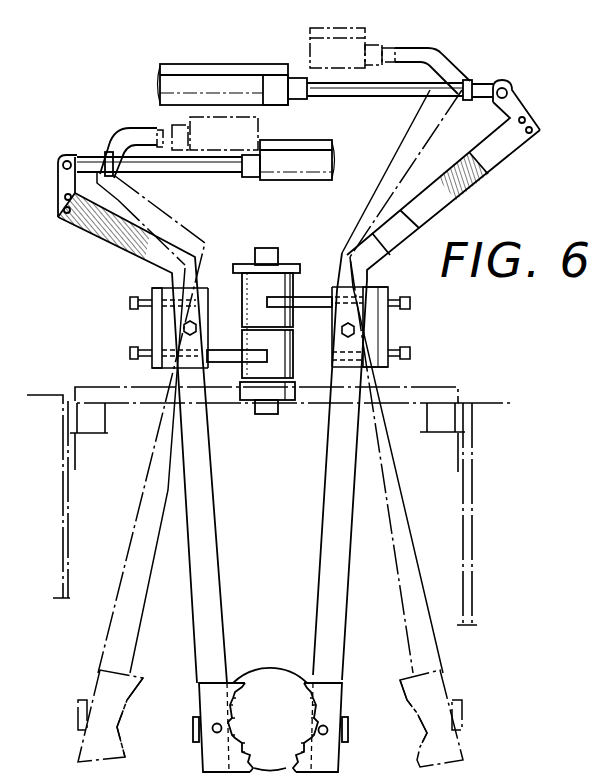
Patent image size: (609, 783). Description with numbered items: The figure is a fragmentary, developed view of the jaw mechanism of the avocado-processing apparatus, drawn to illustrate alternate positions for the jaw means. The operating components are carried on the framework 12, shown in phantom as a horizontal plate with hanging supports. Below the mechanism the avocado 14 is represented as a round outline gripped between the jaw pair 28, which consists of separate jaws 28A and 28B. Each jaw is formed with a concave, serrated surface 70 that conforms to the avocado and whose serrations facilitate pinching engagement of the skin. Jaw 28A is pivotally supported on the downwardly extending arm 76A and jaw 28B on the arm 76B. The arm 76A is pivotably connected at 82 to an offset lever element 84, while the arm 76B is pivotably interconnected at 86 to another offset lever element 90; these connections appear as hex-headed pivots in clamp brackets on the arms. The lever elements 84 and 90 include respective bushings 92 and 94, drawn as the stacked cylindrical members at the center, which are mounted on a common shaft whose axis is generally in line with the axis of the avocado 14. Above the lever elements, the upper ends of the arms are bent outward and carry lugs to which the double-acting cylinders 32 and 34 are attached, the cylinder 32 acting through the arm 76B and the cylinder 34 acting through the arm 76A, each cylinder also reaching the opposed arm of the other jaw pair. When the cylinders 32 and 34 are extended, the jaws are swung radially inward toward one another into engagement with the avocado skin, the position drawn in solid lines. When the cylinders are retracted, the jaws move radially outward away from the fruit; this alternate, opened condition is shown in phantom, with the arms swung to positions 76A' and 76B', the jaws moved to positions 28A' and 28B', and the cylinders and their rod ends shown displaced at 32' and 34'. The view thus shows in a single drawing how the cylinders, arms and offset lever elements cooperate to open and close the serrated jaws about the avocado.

The framework 12 is at (432, 389).
The avocado 14 is at (283, 720).
The jaw pair 28 is at (322, 684).
The jaw 28A is at (279, 681).
The jaw 28B is at (234, 693).
The first jaw in open position 28A' is at (390, 731).
The second jaw in open position 28B' is at (146, 717).
The double-acting cylinder 32 is at (326, 63).
The first hydraulic cylinder in alternate position 32' is at (390, 49).
The double-acting cylinder 34 is at (225, 147).
The second hydraulic cylinder in alternate position 34' is at (166, 130).
The concave serrated surface 70 is at (147, 690).
The arm 76A is at (402, 380).
The arm 76B is at (168, 419).
The first arm in open position 76A' is at (402, 428).
The second arm in open position 76B' is at (138, 467).
The pivotable connection 82 is at (355, 330).
The offset lever element 84 is at (232, 362).
The pivotable connection 86 is at (183, 327).
The offset lever element 90 is at (316, 292).
The bushing 92 is at (250, 277).
The bushing 94 is at (293, 378).